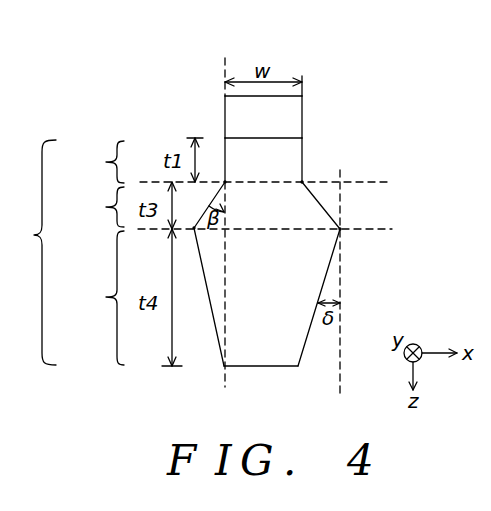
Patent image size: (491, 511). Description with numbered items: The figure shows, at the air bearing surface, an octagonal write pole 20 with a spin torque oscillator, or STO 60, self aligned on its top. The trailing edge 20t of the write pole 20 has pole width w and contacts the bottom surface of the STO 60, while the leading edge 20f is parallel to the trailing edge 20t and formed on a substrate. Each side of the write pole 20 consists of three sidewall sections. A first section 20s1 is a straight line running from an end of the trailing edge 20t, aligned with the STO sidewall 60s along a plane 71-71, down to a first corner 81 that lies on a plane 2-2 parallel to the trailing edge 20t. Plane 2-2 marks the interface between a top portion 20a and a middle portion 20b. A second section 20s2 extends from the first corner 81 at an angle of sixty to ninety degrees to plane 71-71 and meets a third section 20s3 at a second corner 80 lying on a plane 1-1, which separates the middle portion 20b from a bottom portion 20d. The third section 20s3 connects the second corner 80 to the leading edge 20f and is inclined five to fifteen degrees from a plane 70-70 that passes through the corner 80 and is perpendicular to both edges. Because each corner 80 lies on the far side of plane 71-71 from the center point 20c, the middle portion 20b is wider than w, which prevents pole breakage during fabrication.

The plane 1- 1 is at (267, 228).
The plane 2- 2 is at (266, 183).
The write pole 20 is at (30, 252).
The top portion 20a is at (141, 160).
The middle portion 20b is at (141, 205).
The center point 20c is at (261, 267).
The bottom portion 20d is at (141, 297).
The leading edge 20f is at (262, 366).
The trailing edge 20t is at (293, 139).
The first sidewall section 20s1 is at (302, 150).
The second sidewall section 20s2 is at (316, 197).
The third sidewall section 20s3 is at (322, 282).
The STO 60 is at (230, 108).
The STO sidewall 60s is at (302, 106).
The plane 70- 70 is at (342, 283).
The plane 71- 71 is at (224, 226).
The second corner 80 is at (174, 184).
The first corner 81 is at (226, 183).